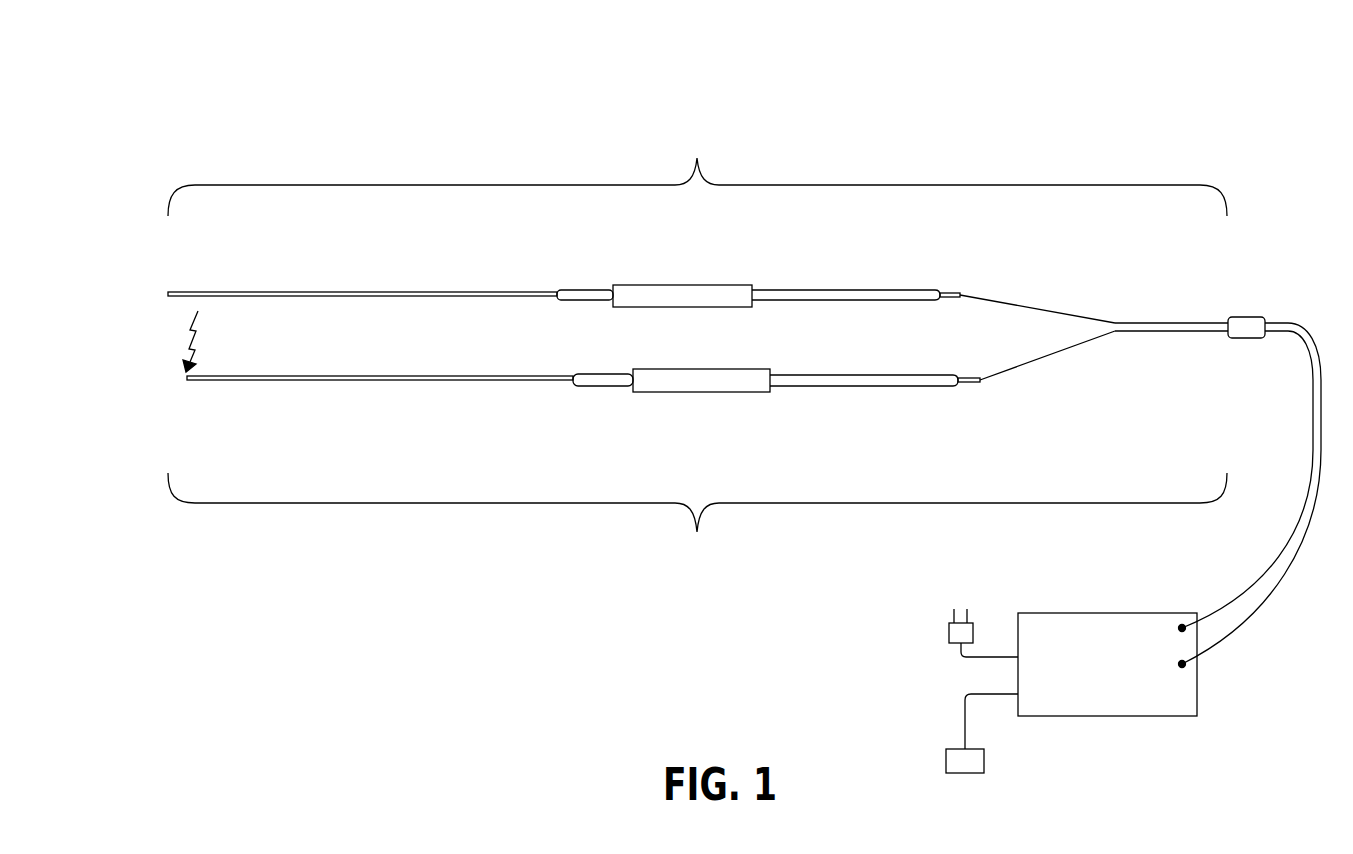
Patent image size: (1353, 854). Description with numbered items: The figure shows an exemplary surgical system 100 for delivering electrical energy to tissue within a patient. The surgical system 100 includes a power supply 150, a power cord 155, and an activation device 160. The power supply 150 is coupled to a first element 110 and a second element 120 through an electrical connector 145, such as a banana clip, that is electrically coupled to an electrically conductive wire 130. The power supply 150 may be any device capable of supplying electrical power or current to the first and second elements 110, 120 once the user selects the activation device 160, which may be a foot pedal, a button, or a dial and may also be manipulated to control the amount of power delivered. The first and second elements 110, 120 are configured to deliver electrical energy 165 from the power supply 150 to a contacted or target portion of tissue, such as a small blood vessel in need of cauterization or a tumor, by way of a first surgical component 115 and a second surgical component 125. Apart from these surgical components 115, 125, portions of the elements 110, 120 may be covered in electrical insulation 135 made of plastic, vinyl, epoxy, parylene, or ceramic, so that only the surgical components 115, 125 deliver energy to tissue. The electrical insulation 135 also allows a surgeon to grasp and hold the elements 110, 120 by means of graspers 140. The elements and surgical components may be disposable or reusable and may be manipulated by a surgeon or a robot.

The surgical system 100 is at (280, 84).
The first element 110 is at (697, 175).
The first surgical component 115 is at (205, 291).
The second element 120 is at (697, 517).
The second surgical component 125 is at (253, 383).
The electrically conductive wire 130 is at (1257, 587).
The electrical insulation 135 is at (583, 289).
The graspers 140 is at (683, 285).
The electrical connector 145 is at (1178, 628).
The power supply 150 is at (1137, 716).
The power cord 155 is at (947, 632).
The activation device 160 is at (945, 762).
The electrical energy 165 is at (185, 342).